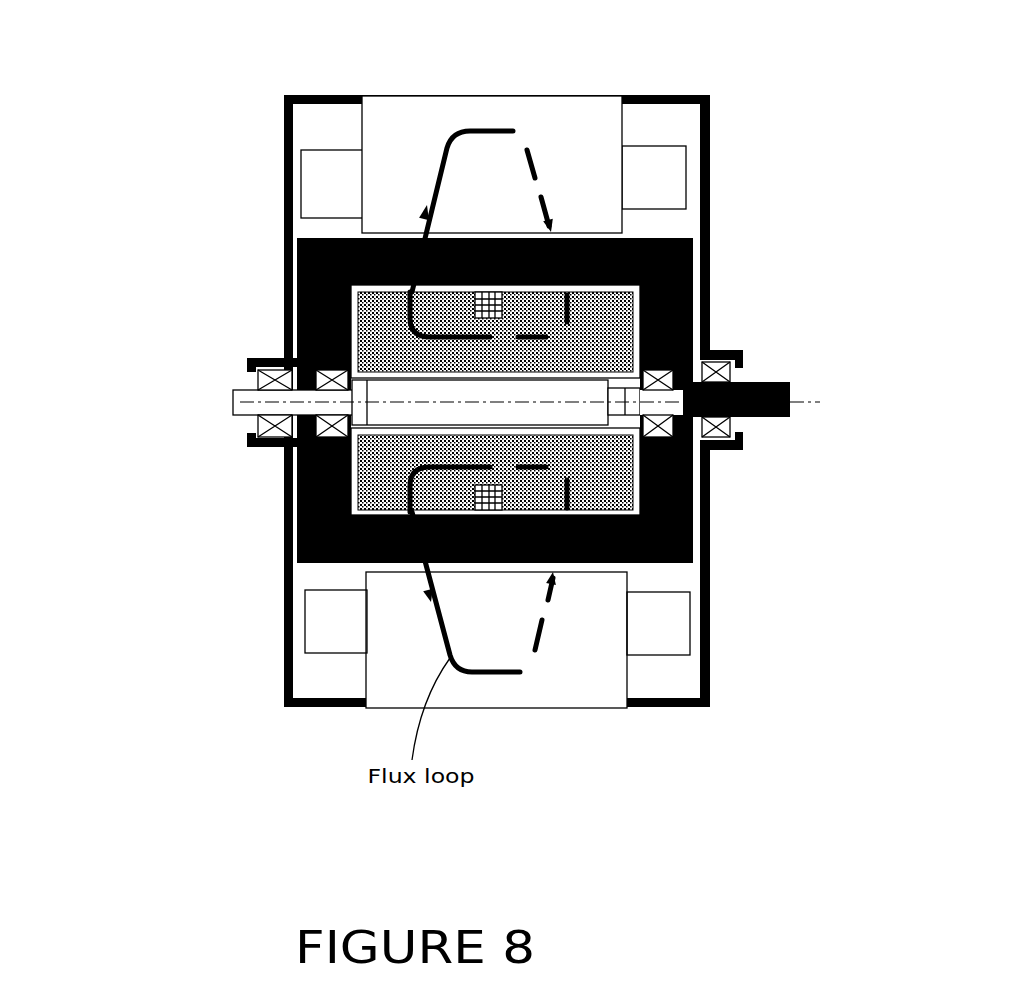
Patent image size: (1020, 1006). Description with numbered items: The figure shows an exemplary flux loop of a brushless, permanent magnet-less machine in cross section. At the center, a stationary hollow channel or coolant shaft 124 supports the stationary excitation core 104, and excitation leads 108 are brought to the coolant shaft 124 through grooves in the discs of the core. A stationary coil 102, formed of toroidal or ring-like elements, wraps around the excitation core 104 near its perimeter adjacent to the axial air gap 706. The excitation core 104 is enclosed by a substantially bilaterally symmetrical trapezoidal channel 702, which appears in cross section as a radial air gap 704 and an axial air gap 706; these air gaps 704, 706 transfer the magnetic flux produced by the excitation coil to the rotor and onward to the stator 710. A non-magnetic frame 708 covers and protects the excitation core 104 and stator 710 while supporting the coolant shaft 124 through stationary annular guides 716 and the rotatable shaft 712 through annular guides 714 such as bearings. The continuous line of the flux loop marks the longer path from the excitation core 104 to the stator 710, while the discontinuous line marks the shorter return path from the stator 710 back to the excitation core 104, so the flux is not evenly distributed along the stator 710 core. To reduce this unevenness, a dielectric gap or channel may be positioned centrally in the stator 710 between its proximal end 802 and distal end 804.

The stationary coil 102 is at (362, 502).
The stationary excitation core 104 is at (362, 448).
The excitation leads 108 is at (232, 410).
The coolant shaft 124 is at (242, 390).
The trapezoidal channel 702 is at (352, 300).
The radial air gap 704 is at (640, 464).
The axial air gap 706 is at (640, 517).
The frame 708 is at (703, 195).
The stator 710 is at (512, 93).
The rotatable shaft 712 is at (788, 380).
The annular guides 714 is at (728, 351).
The stationary annular guides 716 is at (268, 370).
The proximal end 802 is at (365, 672).
The distal end 804 is at (627, 672).